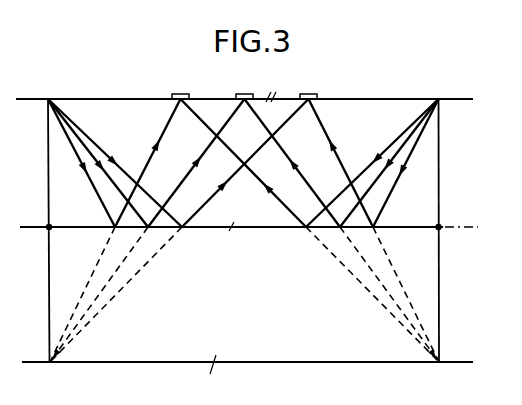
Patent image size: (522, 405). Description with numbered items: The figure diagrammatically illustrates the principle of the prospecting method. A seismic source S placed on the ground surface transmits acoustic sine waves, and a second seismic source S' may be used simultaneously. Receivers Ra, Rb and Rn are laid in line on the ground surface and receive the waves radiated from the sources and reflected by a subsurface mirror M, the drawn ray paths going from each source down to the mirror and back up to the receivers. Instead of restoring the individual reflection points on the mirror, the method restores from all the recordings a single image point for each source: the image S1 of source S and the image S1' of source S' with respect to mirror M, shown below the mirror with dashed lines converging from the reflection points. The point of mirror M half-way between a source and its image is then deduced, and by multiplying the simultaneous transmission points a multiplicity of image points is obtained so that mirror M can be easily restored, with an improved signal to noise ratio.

The seismic source S is at (109, 150).
The seismic source S' is at (375, 150).
The receiver Ra is at (180, 87).
The receiver Rb is at (244, 87).
The receiver Rn is at (307, 87).
The mirror M is at (258, 223).
The image of source S S1 is at (110, 308).
The image of source S' S1' is at (378, 308).